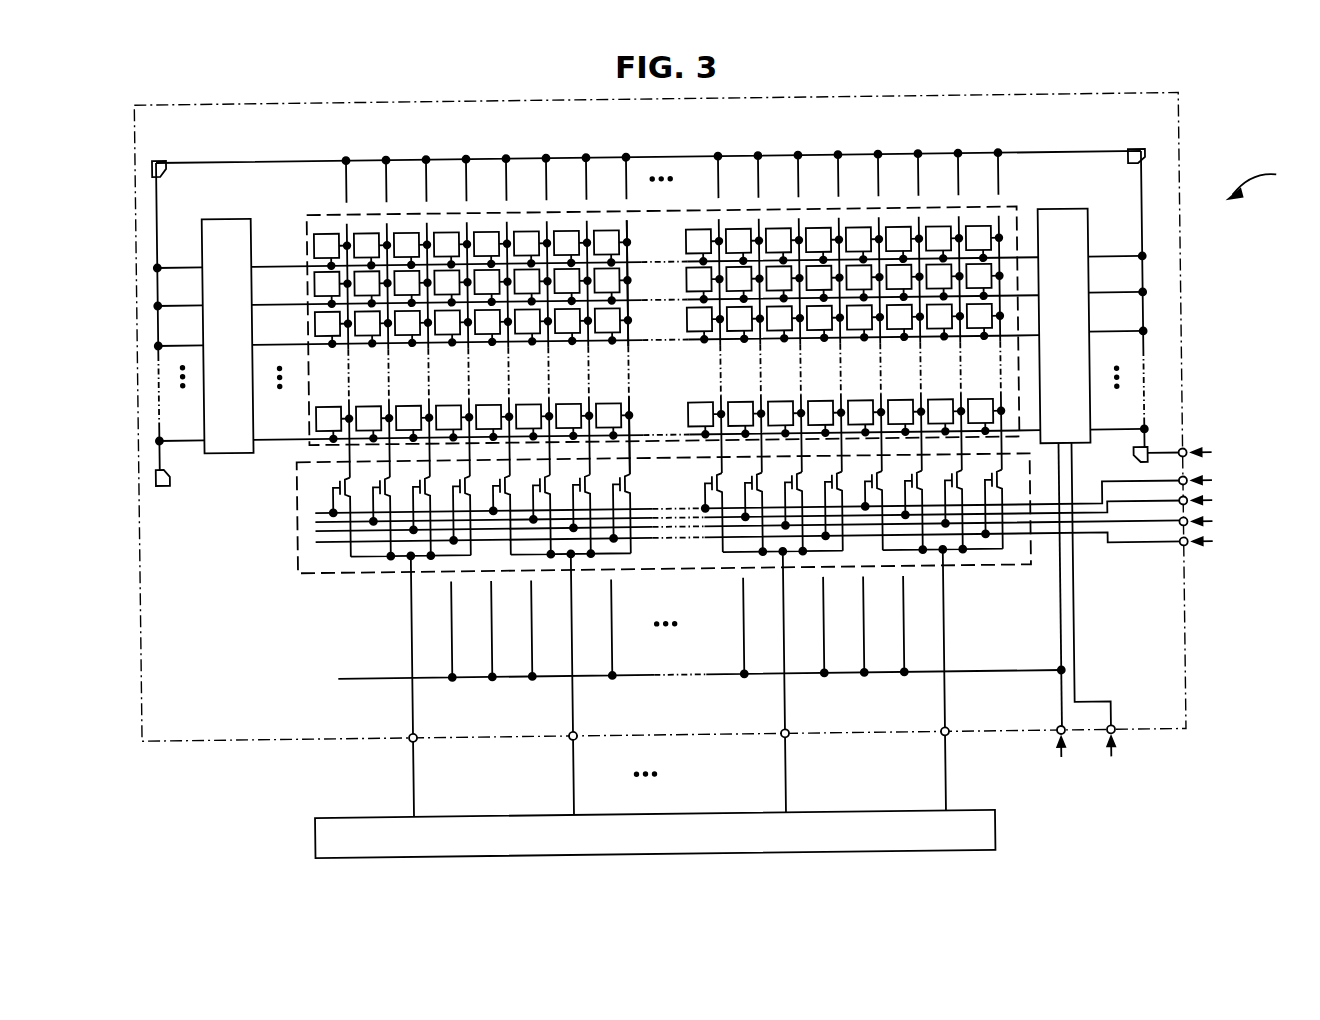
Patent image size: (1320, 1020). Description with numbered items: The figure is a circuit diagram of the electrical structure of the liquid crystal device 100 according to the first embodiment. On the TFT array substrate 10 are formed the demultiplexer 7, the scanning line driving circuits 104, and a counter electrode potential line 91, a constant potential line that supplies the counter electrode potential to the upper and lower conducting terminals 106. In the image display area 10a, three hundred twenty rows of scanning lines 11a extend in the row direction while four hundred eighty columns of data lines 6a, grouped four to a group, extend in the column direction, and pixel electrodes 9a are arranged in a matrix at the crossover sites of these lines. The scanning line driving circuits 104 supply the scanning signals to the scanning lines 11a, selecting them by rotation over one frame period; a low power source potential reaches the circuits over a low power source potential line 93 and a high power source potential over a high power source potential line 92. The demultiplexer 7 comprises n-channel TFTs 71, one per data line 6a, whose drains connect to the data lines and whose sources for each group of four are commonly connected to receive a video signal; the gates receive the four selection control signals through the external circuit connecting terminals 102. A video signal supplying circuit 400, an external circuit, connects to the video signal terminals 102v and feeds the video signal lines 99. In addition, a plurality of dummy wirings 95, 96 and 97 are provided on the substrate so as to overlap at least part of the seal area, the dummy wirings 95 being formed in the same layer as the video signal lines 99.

The liquid crystal device 100 is at (1271, 178).
The TFT array substrate 10 is at (1181, 302).
The image display area 10a is at (1005, 218).
The scanning line driving circuit 104 is at (1063, 220).
The connection terminal 106 is at (160, 161).
The counter electrode potential line 91 is at (157, 218).
The dummy wiring 96 is at (170, 268).
The dummy wiring 97 is at (346, 192).
The pixel electrode 9a is at (316, 243).
The data line 6a is at (630, 422).
The scanning line 11a is at (280, 449).
The TFT 71 is at (336, 490).
The demultiplexer 7 is at (293, 533).
The video signal line 99 is at (406, 645).
The dummy wiring 95 is at (446, 627).
The low power source potential line 93 is at (1055, 632).
The high power source potential line 92 is at (1068, 634).
The external circuit connecting terminal 102 is at (1182, 462).
The video signal terminal 102v is at (782, 744).
The video signal supplying circuit 400 is at (987, 842).